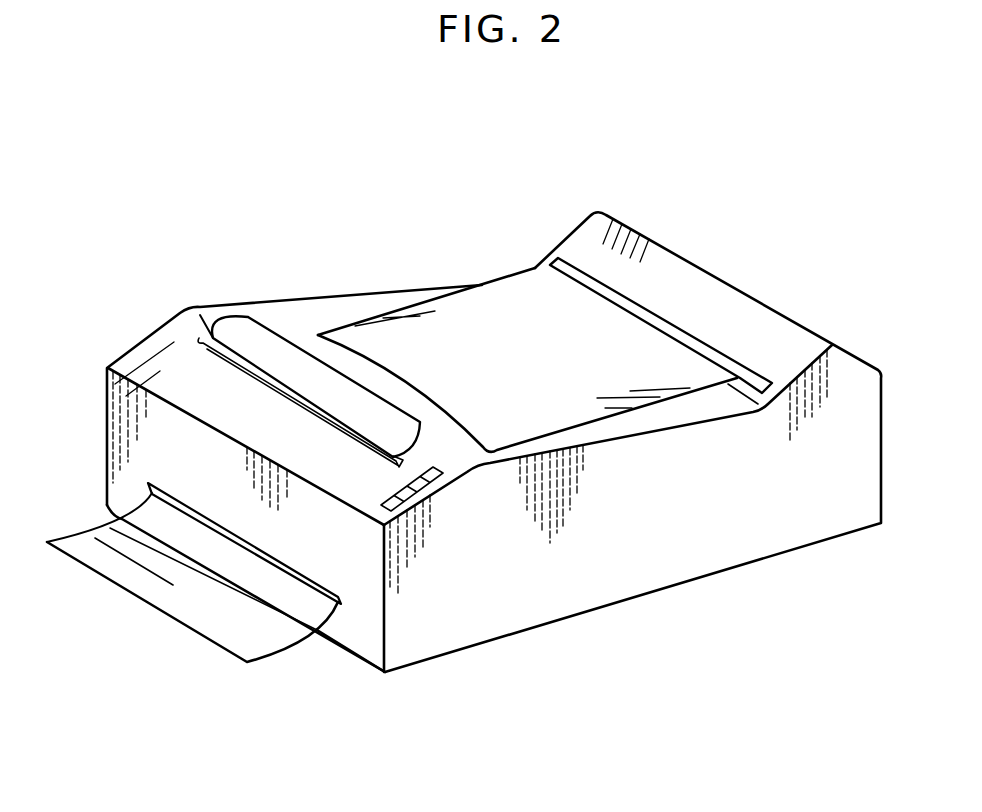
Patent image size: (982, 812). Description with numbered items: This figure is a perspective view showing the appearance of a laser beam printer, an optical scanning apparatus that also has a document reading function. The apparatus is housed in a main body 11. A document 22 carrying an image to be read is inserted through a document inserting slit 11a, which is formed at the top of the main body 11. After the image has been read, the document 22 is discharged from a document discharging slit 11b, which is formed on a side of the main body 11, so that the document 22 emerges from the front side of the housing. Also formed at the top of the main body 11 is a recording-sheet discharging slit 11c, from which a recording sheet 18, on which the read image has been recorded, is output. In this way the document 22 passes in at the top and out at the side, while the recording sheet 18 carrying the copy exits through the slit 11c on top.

The main body 11 is at (497, 617).
The document inserting slit 11a is at (198, 340).
The document discharging slit 11b is at (148, 492).
The recording-sheet discharging slit 11c is at (755, 378).
The recording sheet 18 is at (527, 296).
The document 22 is at (275, 637).